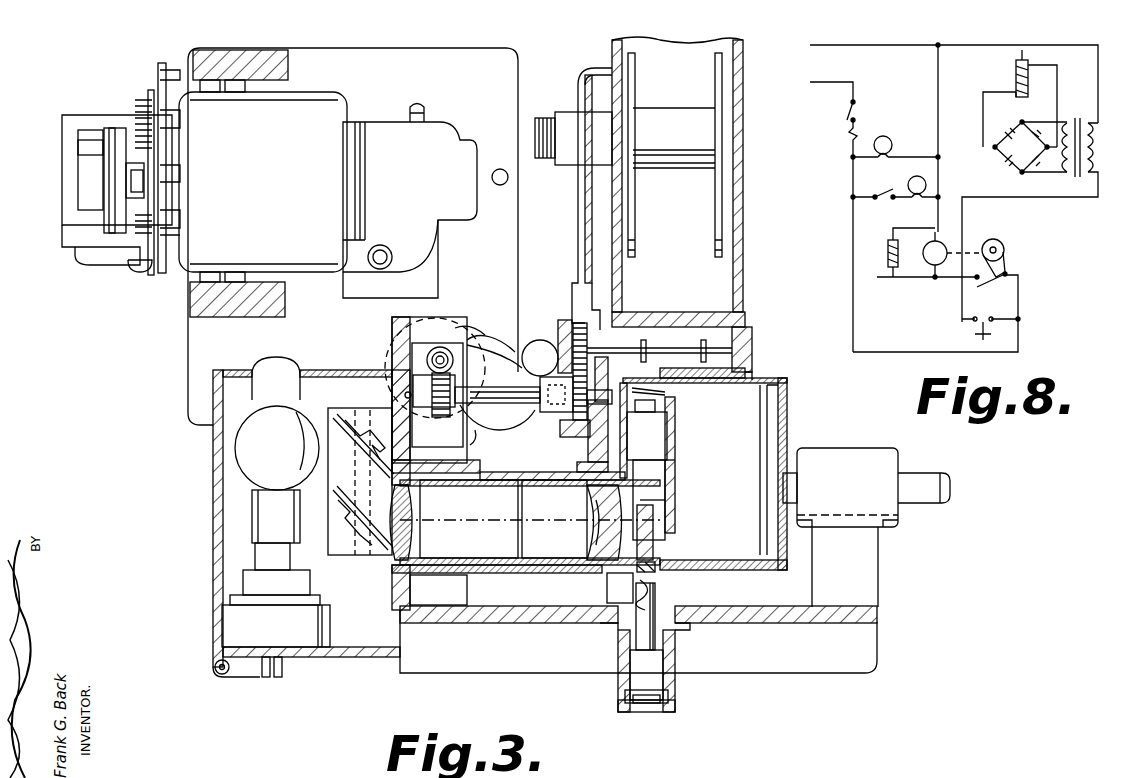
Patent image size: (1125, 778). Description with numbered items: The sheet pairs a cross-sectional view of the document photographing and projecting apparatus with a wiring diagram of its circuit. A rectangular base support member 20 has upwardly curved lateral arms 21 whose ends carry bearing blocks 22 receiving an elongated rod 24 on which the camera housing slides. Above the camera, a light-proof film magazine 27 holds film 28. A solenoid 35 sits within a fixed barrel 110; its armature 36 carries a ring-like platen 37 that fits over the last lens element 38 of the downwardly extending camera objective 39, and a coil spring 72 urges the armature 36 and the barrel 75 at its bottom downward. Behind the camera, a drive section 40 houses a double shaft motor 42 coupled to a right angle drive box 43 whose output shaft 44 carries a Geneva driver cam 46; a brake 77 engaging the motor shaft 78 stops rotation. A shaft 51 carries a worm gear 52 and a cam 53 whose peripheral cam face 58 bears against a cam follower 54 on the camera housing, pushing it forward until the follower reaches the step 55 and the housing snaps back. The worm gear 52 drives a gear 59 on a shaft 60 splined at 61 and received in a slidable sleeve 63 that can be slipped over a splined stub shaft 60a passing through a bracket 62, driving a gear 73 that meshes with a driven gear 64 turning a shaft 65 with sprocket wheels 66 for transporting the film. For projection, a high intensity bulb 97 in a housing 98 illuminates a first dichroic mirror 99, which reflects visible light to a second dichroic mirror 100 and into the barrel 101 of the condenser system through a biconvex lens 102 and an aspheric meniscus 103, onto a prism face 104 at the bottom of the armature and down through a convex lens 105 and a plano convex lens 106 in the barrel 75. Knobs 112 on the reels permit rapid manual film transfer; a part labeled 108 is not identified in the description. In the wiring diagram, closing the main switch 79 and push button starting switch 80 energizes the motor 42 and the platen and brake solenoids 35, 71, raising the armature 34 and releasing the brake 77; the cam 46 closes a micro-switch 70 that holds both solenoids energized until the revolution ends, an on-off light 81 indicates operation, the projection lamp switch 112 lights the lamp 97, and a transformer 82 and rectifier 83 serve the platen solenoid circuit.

In FIG. 3, the base support member 20 is at (462, 617).
In FIG. 3, the lateral arms 21 is at (878, 568).
In FIG. 3, the bearing blocks 22 is at (876, 455).
In FIG. 3, the elongated rod 24 is at (930, 472).
In FIG. 3, the film magazine 27 is at (745, 133).
In FIG. 3, the film 28 is at (720, 77).
In FIG. 3, the armature 34 is at (786, 428).
In FIG. 3, the solenoid 35 is at (677, 430).
In FIG. 8, the solenoid 35 is at (1015, 70).
In FIG. 3, the armature 36 is at (652, 484).
In FIG. 8, the armature 36 is at (1018, 96).
In FIG. 3, the platen 37 is at (657, 572).
In FIG. 3, the last lens element 38 is at (680, 630).
In FIG. 3, the camera objective 39 is at (640, 635).
In FIG. 3, the drive section 40 is at (190, 95).
In FIG. 3, the double shaft motor 42 is at (322, 129).
In FIG. 8, the double shaft motor 42 is at (945, 280).
In FIG. 3, the right angle drive box 43 is at (455, 153).
In FIG. 3, the output shaft 44 is at (392, 257).
In FIG. 8, the output shaft 44 is at (968, 248).
In FIG. 8, the Geneva driver cam 46 is at (1002, 243).
In FIG. 3, the shaft 51 is at (442, 348).
In FIG. 3, the worm gear 52 is at (400, 350).
In FIG. 3, the cam 53 is at (506, 369).
In FIG. 3, the cam follower 54 is at (540, 342).
In FIG. 3, the step 55 is at (492, 352).
In FIG. 3, the cam face 58 is at (478, 440).
In FIG. 3, the gear 59 is at (418, 368).
In FIG. 3, the shaft 60 is at (497, 406).
In FIG. 3, the splined stub shaft 60a is at (659, 366).
In FIG. 3, the splines 61 is at (522, 418).
In FIG. 3, the bracket 62 is at (580, 322).
In FIG. 3, the sleeve 63 is at (546, 415).
In FIG. 3, the driven gear 64 is at (593, 327).
In FIG. 3, the shaft 65 is at (672, 345).
In FIG. 3, the sprocket wheels 66 is at (718, 345).
In FIG. 8, the micro-switch 70 is at (988, 286).
In FIG. 3, the brake solenoid 71 is at (68, 222).
In FIG. 8, the brake solenoid 71 is at (893, 240).
In FIG. 3, the coil spring 72 is at (650, 390).
In FIG. 3, the gear 73 is at (647, 430).
In FIG. 3, the barrel 75 is at (660, 545).
In FIG. 3, the brake 77 is at (102, 168).
In FIG. 3, the motor shaft 78 is at (150, 178).
In FIG. 8, the main switch 79 is at (856, 108).
In FIG. 8, the push button starting switch 80 is at (975, 332).
In FIG. 8, the on-off light 81 is at (890, 138).
In FIG. 8, the transformer 82 is at (1078, 118).
In FIG. 8, the rectifier 83 is at (1010, 165).
In FIG. 3, the high intensity bulb 97 is at (290, 453).
In FIG. 8, the high intensity bulb 97 is at (926, 180).
In FIG. 3, the housing 98 is at (213, 508).
In FIG. 3, the first mirror 99 is at (345, 420).
In FIG. 3, the second dichroic mirror 100 is at (382, 556).
In FIG. 3, the barrel 101 is at (466, 558).
In FIG. 3, the biconvex lens 102 is at (415, 500).
In FIG. 3, the aspheric meniscus 103 is at (590, 503).
In FIG. 3, the prism face 104 is at (650, 505).
In FIG. 3, the convex lens 105 is at (595, 545).
In FIG. 3, the plano convex lens 106 is at (632, 572).
In FIG. 3, the sleeve 108 is at (676, 460).
In FIG. 3, the fixed barrel 110 is at (768, 380).
In FIG. 3, the knobs 112 is at (545, 118).
In FIG. 8, the knobs 112 is at (873, 192).